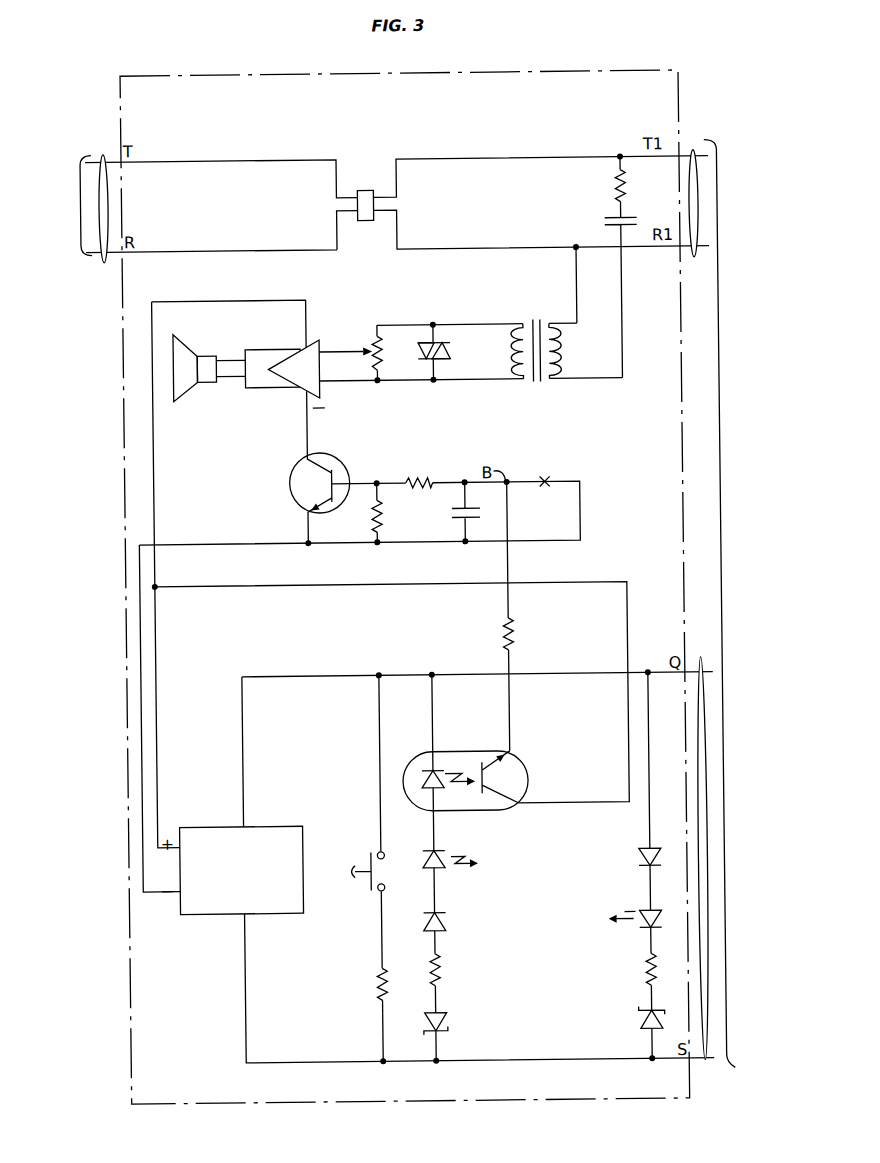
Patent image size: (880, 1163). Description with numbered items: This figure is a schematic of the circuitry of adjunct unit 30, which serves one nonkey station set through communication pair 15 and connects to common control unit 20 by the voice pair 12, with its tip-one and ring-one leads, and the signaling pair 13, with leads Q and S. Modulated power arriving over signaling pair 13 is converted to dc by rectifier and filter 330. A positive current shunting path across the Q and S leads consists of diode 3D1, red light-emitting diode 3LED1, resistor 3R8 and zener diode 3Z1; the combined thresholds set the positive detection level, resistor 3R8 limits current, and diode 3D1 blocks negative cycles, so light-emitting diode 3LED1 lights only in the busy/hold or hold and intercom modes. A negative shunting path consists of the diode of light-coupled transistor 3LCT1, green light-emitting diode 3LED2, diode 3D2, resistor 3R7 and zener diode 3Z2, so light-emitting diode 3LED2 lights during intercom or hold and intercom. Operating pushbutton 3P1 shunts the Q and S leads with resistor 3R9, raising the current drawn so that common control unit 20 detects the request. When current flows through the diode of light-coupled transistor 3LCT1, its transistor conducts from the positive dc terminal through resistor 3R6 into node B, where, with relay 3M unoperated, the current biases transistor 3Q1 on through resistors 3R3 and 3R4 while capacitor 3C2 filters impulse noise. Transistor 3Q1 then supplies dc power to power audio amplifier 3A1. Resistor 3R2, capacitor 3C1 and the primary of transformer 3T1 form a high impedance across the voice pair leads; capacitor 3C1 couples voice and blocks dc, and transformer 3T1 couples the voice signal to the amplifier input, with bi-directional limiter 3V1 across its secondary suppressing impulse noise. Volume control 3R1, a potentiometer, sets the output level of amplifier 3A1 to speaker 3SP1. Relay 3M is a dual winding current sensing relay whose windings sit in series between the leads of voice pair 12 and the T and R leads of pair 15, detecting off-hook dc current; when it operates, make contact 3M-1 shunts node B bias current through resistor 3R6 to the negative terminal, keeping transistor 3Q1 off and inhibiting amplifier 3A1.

The adjunct unit 30 is at (658, 74).
The communication pair 15 is at (108, 151).
The voice pair 12 is at (698, 153).
The signaling pair 13 is at (700, 666).
The common control unit 20 is at (760, 602).
The rectifier and filter 330 is at (283, 825).
The relay 3M is at (362, 195).
The resistor 3R2 is at (612, 188).
The capacitor 3C1 is at (609, 223).
The speaker 3SP1 is at (193, 343).
The power audio amplifier 3A1 is at (307, 386).
The volume control 3R1 is at (377, 342).
The bi-directional limiter 3V1 is at (449, 351).
The transformer 3T1 is at (567, 339).
The transistor 3Q1 is at (301, 468).
The resistor 3R4 is at (372, 520).
The resistor 3R3 is at (430, 477).
The make contact 3M-1 is at (547, 477).
The capacitor 3C2 is at (452, 514).
The resistor 3R6 is at (518, 634).
The pushbutton 3P1 is at (364, 851).
The resistor 3R9 is at (372, 984).
The light-coupled transistor 3LCT1 is at (476, 752).
The light-emitting diode 3LED2 is at (436, 850).
The diode 3D2 is at (440, 927).
The resistor 3R7 is at (442, 973).
The zener diode 3Z2 is at (443, 1028).
The diode 3D1 is at (646, 850).
The light-emitting diode 3LED1 is at (645, 927).
The resistor 3R8 is at (640, 972).
The zener diode 3Z1 is at (642, 1028).